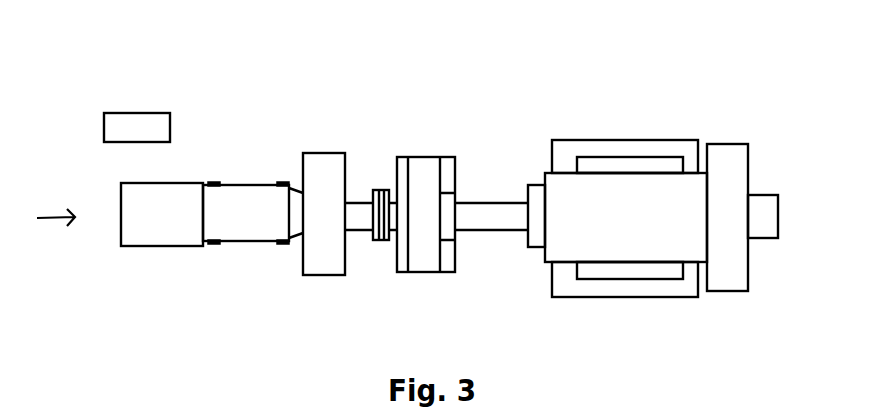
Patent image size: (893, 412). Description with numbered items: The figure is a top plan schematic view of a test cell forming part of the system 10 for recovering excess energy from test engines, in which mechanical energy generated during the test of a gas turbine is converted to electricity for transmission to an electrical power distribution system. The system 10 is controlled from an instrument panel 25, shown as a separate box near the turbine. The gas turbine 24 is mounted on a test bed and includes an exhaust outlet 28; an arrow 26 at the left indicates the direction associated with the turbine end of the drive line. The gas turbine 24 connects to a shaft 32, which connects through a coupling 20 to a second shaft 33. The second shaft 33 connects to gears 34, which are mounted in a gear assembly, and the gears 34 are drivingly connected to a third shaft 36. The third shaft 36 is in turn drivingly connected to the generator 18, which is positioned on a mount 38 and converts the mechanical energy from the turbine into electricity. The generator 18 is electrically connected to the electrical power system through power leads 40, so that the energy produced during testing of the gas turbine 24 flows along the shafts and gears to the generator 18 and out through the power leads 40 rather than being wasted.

The system 10 is at (227, 112).
The generator 18 is at (644, 226).
The coupling 20 is at (378, 190).
The gas turbine 24 is at (168, 240).
The instrument panel 25 is at (128, 118).
The drive direction arrow 26 is at (50, 219).
The exhaust outlet 28 is at (328, 157).
The shaft 32 is at (359, 232).
The second shaft 33 is at (402, 223).
The gears 34 is at (425, 265).
The third shaft 36 is at (487, 202).
The mount 38 is at (621, 298).
The power leads 40 is at (762, 195).